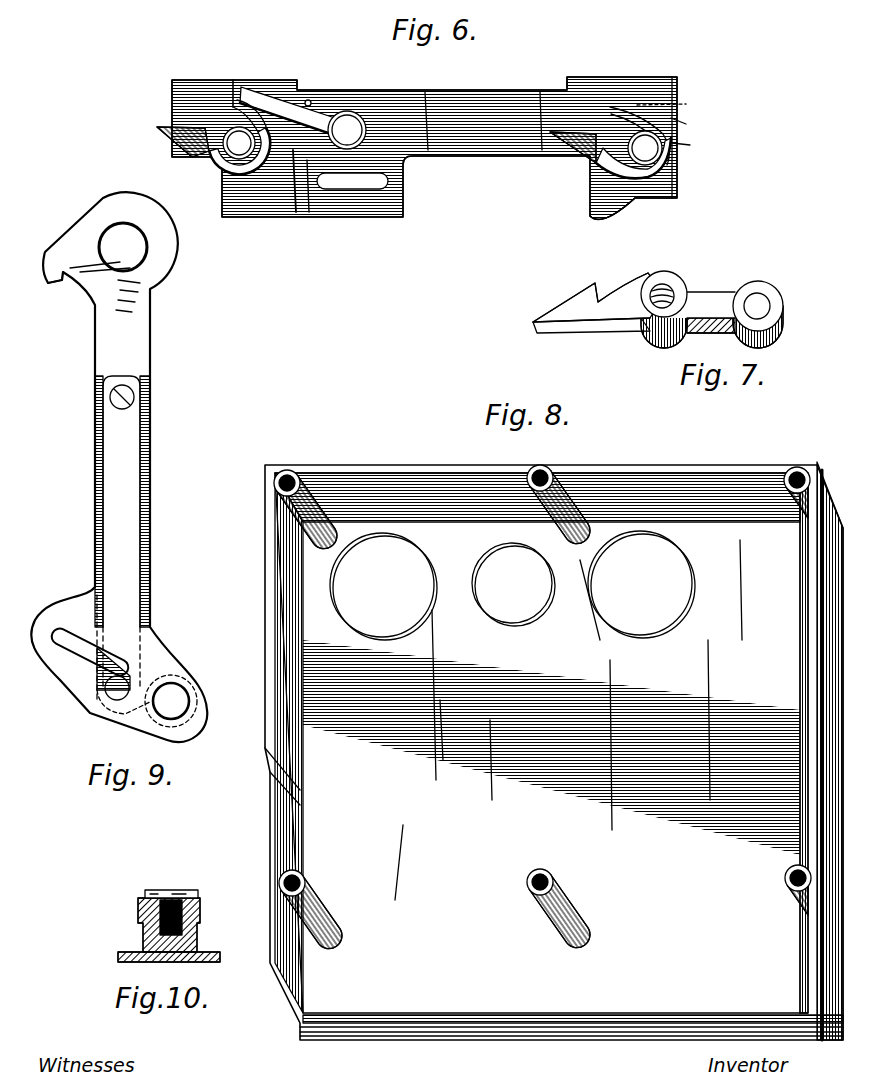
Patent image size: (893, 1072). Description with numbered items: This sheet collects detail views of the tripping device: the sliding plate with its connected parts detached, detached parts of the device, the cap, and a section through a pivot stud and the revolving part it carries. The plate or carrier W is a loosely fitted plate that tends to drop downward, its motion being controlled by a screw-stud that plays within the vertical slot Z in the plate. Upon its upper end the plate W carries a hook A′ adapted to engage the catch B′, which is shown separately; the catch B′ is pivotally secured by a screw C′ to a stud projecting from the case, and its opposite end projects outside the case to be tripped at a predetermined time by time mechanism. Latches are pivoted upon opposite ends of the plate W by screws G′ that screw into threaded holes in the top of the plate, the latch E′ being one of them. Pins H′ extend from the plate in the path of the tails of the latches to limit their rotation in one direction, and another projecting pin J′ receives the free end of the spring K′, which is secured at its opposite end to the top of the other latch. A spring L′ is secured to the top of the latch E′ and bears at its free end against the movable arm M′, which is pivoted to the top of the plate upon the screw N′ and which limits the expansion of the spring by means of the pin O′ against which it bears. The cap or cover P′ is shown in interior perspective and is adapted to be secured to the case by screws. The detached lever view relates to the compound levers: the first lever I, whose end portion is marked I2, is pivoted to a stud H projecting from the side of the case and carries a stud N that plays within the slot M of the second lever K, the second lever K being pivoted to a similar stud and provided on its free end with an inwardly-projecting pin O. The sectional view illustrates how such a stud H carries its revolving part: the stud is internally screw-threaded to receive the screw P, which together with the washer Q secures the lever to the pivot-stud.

In FIG. 6, the plate or carrier W is at (425, 92).
In FIG. 6, the vertical slot Z is at (352, 181).
In FIG. 6, the movable arm M′ is at (289, 111).
In FIG. 6, the screw N′ is at (347, 130).
In FIG. 6, the pin O′ is at (310, 101).
In FIG. 6, the spring L′ is at (233, 80).
In FIG. 6, the pins H′ is at (251, 111).
In FIG. 6, the screw C′ is at (239, 143).
In FIG. 6, the latch E′ is at (213, 148).
In FIG. 6, the spring K′ is at (610, 107).
In FIG. 6, the screws G′ is at (672, 161).
In FIG. 6, the projecting pin J′ is at (666, 103).
In FIG. 6, the hook A′ is at (598, 210).
In FIG. 7, the catch B′ is at (658, 309).
In FIG. 8, the cap or cover P′ is at (554, 751).
In FIG. 9, the first lever I is at (119, 467).
In FIG. 9, the hook I2 is at (55, 267).
In FIG. 9, the second lever K is at (122, 538).
In FIG. 9, the inwardly-projecting pin O is at (122, 409).
In FIG. 9, the slot M is at (90, 658).
In FIG. 9, the stud N is at (147, 701).
In FIG. 10, the stud H is at (197, 936).
In FIG. 10, the washer Q is at (138, 898).
In FIG. 10, the screw P is at (198, 892).